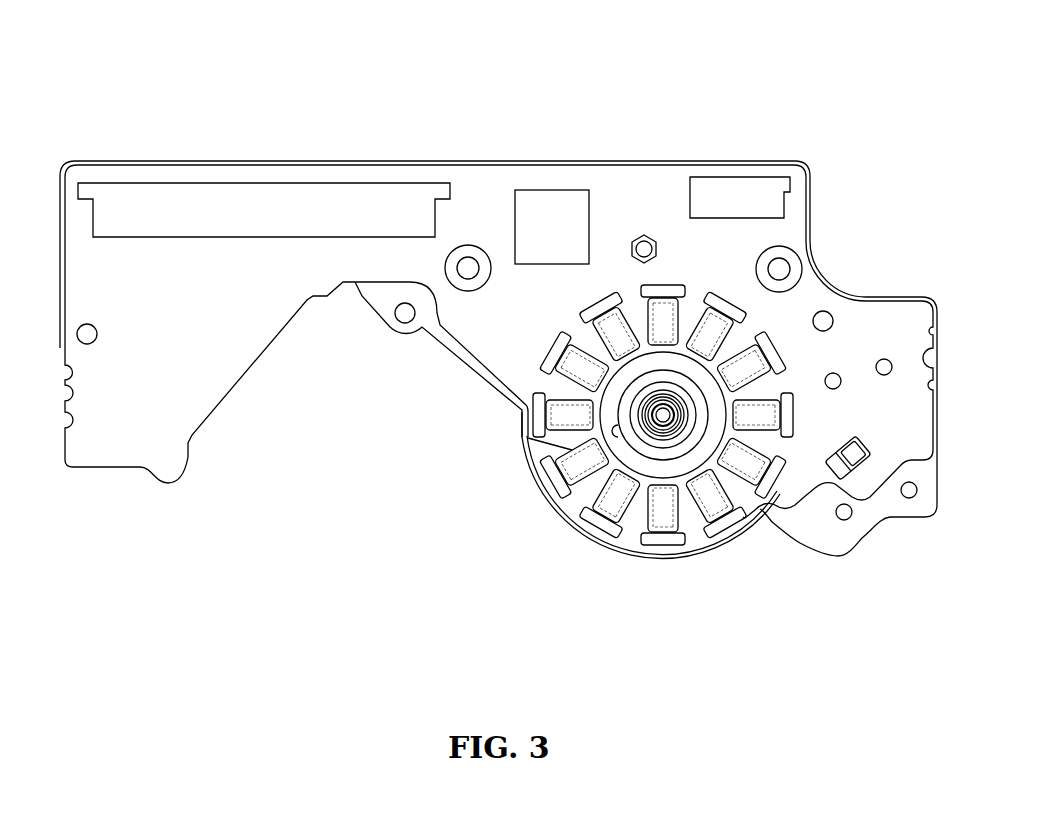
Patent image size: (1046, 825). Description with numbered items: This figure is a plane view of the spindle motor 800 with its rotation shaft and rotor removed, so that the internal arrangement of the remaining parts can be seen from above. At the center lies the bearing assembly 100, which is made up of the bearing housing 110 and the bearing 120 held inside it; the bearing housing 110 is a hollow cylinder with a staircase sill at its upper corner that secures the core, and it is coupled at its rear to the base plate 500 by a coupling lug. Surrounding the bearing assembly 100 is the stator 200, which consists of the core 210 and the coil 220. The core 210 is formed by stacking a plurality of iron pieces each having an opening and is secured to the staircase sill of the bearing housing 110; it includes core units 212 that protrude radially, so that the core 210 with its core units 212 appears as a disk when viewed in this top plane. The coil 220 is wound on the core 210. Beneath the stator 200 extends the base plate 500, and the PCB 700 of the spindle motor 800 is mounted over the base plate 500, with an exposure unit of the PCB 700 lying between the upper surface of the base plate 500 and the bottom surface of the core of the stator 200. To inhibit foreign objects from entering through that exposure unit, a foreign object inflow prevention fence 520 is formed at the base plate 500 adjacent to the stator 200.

The spindle motor 800 is at (480, 150).
The PCB (printed circuit board) 700 is at (852, 328).
The base plate 500 is at (868, 514).
The foreign object inflow prevention fence 520 is at (540, 473).
The stator 200 is at (627, 461).
The core 210 is at (585, 533).
The core units 212 is at (727, 530).
The coil 220 is at (580, 467).
The bearing assembly 100 is at (671, 523).
The bearing housing 110 is at (672, 450).
The bearing 120 is at (662, 428).